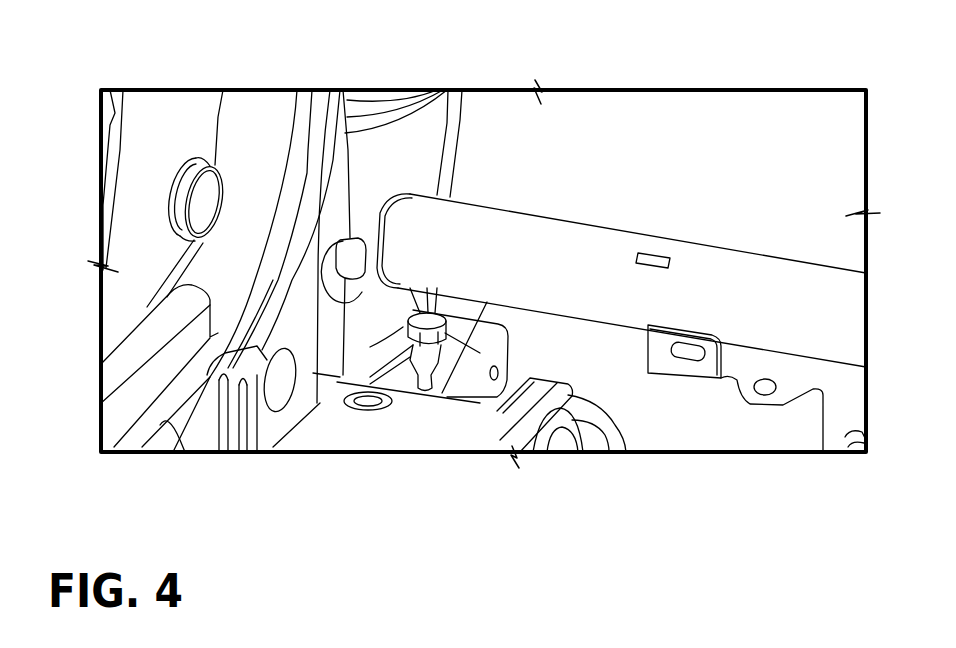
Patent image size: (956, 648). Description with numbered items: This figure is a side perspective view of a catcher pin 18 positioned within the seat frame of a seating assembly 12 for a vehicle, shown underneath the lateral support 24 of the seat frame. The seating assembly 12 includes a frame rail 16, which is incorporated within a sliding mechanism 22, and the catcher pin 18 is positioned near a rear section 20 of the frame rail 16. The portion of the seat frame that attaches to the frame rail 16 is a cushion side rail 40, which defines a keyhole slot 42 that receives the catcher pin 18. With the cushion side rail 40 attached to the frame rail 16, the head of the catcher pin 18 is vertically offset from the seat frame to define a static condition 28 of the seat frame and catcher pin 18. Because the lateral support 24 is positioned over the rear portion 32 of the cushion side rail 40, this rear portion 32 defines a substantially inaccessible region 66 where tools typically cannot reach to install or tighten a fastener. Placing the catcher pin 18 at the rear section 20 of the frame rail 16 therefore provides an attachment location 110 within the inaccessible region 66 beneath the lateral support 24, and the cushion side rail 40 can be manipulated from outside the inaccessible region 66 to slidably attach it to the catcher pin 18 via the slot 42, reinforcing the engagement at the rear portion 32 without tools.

The seating assembly 12 is at (447, 84).
The frame rail 16 is at (498, 395).
The catcher pin 18 is at (446, 305).
The rear section 20 is at (503, 323).
The sliding mechanism 22 is at (578, 385).
The lateral support 24 is at (531, 248).
The static condition 28 is at (400, 460).
The rear portion 32 is at (445, 358).
The cushion side rail 40 is at (370, 340).
The slot 42 is at (343, 385).
The inaccessible region 66 is at (381, 299).
The attachment location 110 is at (435, 370).